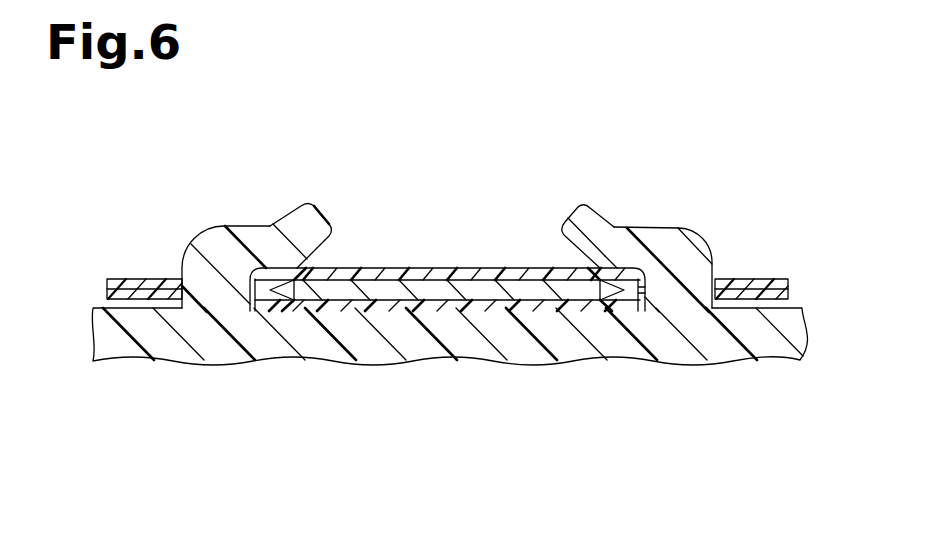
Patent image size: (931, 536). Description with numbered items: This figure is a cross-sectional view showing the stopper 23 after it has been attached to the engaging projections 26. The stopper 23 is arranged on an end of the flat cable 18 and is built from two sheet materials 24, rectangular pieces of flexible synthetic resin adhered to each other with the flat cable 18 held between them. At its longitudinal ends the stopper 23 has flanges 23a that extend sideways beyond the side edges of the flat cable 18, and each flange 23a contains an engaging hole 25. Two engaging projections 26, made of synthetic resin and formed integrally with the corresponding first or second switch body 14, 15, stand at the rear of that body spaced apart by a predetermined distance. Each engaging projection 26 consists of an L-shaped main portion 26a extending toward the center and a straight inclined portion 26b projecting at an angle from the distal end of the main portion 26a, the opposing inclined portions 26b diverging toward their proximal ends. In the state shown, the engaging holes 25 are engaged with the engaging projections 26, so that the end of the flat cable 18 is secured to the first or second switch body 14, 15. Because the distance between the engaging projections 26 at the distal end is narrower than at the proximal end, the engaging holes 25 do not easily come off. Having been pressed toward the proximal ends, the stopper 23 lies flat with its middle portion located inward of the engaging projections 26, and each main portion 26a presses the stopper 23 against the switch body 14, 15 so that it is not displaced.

The first switch body 14 is at (463, 378).
The second switch body 15 is at (798, 348).
The flat cable 18 is at (461, 289).
The stopper 23 is at (447, 302).
The flange 23a is at (131, 278).
The sheet material 24 is at (525, 268).
The engaging hole 25 is at (255, 288).
The engaging projection 26 is at (313, 157).
The main portion 26a is at (216, 236).
The inclined portion 26b is at (297, 222).